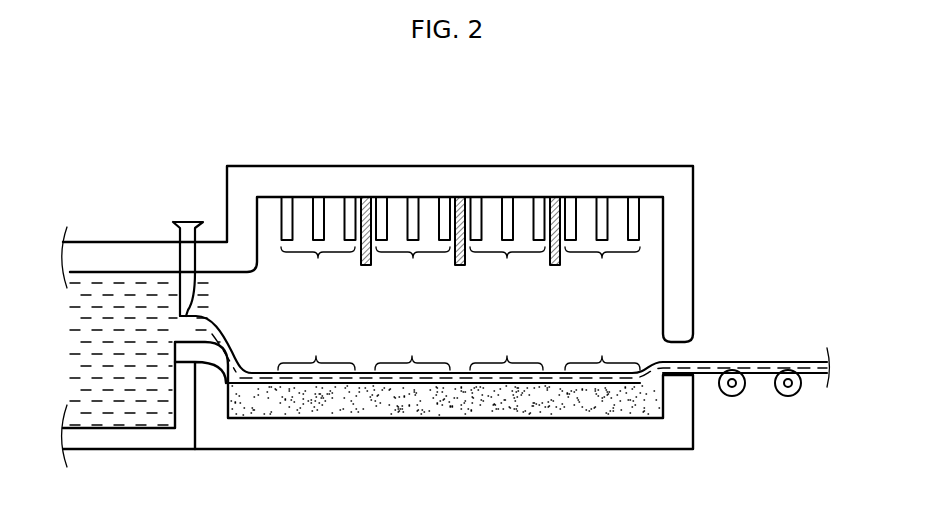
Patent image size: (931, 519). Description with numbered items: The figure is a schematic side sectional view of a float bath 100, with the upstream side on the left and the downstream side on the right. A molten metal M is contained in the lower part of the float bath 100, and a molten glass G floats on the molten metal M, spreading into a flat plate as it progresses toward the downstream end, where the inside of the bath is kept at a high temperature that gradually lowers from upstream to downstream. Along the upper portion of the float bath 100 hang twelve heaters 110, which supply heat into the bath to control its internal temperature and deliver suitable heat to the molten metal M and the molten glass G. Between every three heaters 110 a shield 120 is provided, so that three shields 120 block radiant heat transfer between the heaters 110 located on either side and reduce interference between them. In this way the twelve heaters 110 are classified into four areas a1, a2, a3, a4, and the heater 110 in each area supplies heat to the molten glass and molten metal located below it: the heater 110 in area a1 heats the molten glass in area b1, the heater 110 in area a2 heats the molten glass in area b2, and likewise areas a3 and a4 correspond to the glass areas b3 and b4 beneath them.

The float bath 100 is at (440, 139).
The heater 110 is at (382, 203).
The shield 120 is at (555, 203).
The area a1 is at (318, 268).
The area a2 is at (413, 268).
The area a3 is at (507, 268).
The area a4 is at (602, 268).
The area b1 is at (316, 348).
The area b2 is at (412, 348).
The area b3 is at (506, 348).
The area b4 is at (602, 348).
The molten glass G is at (378, 379).
The molten metal M is at (502, 402).